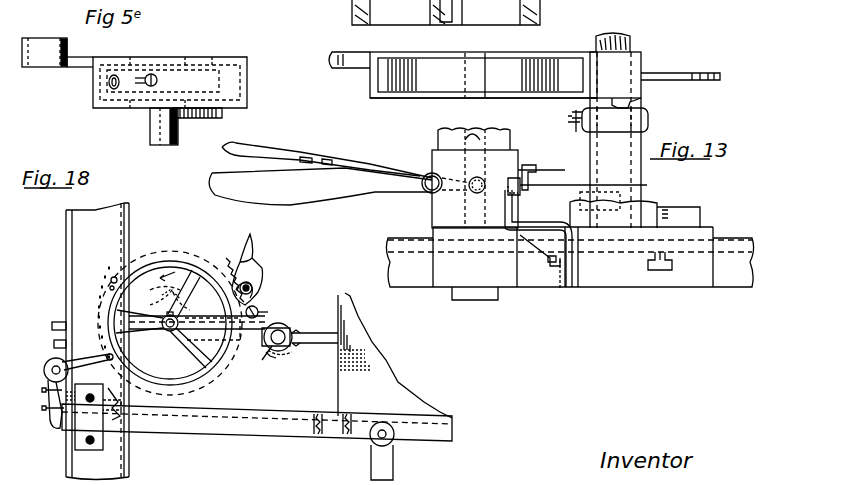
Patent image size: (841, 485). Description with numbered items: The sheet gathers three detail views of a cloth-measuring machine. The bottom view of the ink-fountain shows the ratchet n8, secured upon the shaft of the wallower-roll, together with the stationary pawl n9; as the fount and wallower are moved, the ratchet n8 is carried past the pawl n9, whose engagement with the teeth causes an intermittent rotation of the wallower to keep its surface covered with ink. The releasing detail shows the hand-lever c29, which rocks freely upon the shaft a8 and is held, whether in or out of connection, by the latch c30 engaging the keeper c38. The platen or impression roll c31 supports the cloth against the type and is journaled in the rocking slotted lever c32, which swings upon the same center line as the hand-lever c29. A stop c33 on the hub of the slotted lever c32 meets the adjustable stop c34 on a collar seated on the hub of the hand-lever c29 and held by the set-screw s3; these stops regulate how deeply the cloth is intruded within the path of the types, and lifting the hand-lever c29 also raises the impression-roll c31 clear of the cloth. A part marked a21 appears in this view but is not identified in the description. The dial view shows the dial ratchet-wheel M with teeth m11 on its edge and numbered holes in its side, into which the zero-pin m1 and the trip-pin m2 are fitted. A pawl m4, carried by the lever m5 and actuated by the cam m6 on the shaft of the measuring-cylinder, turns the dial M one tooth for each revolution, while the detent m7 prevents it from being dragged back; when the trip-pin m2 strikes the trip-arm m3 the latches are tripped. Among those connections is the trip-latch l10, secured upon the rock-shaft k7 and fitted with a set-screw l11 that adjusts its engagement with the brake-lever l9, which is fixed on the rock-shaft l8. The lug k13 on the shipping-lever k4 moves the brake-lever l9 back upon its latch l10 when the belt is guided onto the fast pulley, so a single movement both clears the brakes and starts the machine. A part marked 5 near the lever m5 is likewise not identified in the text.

In FIG. 5E, the stationary pawl n9 is at (152, 116).
In FIG. 5E, the ratchet n8 is at (205, 116).
In FIG. 13, the frame bar a21 is at (447, 24).
In FIG. 13, the shaft a8 is at (628, 38).
In FIG. 13, the platen or impression roll c31 is at (463, 75).
In FIG. 13, the rocking slotted lever c32 is at (503, 94).
In FIG. 13, the fixed stop c33 is at (626, 95).
In FIG. 13, the adjustable stop c34 is at (607, 108).
In FIG. 13, the set-screw s3 is at (566, 121).
In FIG. 13, the latch c30 is at (512, 182).
In FIG. 13, the hand-lever c29 is at (347, 173).
In FIG. 13, the keeper c38 is at (503, 200).
In FIG. 18, the dial ratchet-wheel M is at (181, 323).
In FIG. 18, the trip-pin m2 is at (112, 279).
In FIG. 18, the ratchet teeth m11 is at (226, 262).
In FIG. 18, the detent m7 is at (250, 269).
In FIG. 18, the pawl m4 is at (258, 300).
In FIG. 18, the lever m5 is at (280, 322).
In FIG. 18, the cam m6 is at (283, 362).
In FIG. 18, the shaft 5 is at (263, 361).
In FIG. 18, the brake-lever l9 is at (257, 427).
In FIG. 18, the shipping-lever k4 is at (371, 425).
In FIG. 18, the rock-shaft l8 is at (390, 440).
In FIG. 18, the rock-shaft k7 is at (44, 369).
In FIG. 18, the trip-arm m3 is at (87, 362).
In FIG. 18, the zero-pin m1 is at (104, 368).
In FIG. 18, the trip-latch l10 is at (54, 430).
In FIG. 18, the set-screw l11 is at (42, 408).
In FIG. 18, the lug k13 is at (114, 428).